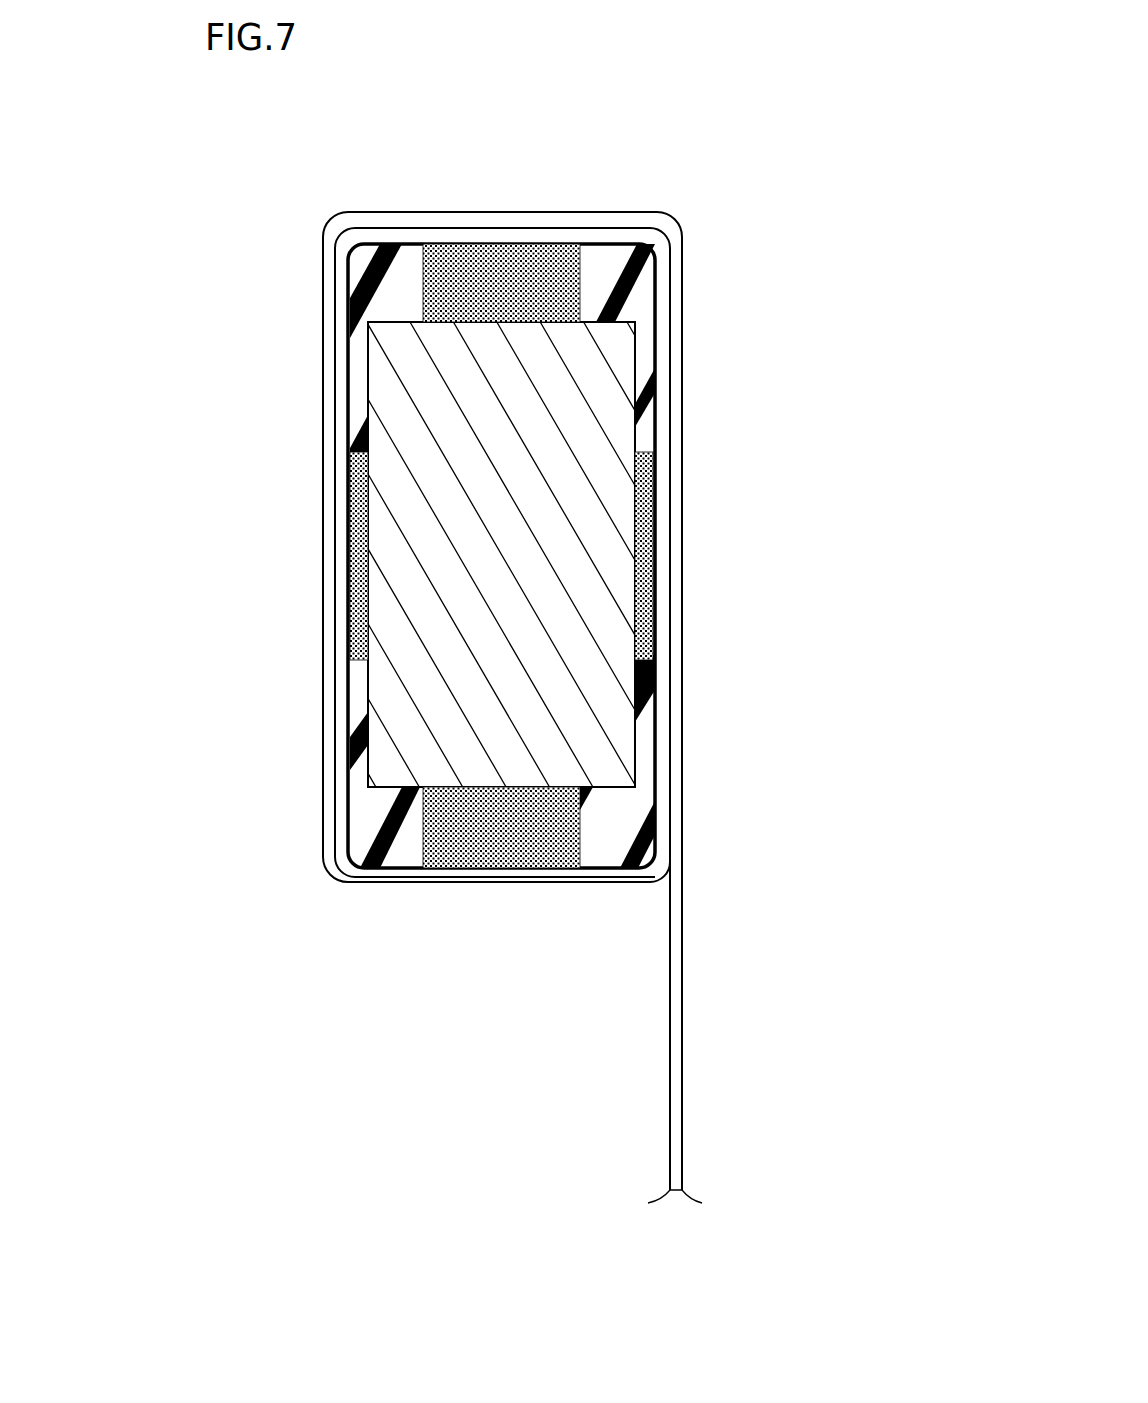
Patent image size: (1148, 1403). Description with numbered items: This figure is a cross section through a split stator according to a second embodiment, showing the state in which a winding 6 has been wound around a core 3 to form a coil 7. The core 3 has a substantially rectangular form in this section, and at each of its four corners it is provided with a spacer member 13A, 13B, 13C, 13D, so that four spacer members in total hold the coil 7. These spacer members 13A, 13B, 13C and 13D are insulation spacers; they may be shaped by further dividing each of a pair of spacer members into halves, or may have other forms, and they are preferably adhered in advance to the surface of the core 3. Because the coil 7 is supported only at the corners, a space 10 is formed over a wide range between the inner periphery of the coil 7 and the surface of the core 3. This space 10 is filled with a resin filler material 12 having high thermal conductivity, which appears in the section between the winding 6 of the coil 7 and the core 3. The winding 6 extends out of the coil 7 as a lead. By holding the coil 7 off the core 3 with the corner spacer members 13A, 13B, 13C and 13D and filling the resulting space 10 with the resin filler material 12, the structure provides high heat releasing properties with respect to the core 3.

The core 3 is at (422, 386).
The winding 6 is at (682, 1026).
The coil 7 is at (714, 356).
The space 10 is at (461, 228).
The resin filler material 12 is at (503, 290).
The spacer member 13A is at (358, 263).
The spacer member 13B is at (600, 262).
The spacer member 13C is at (605, 837).
The spacer member 13D is at (360, 822).